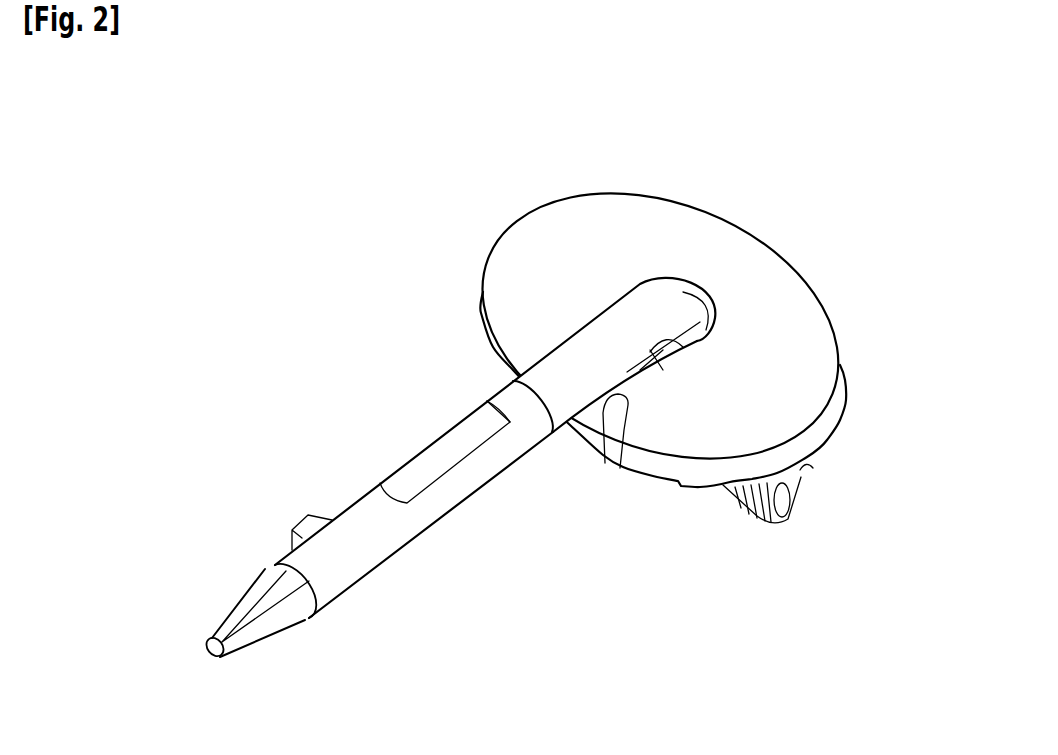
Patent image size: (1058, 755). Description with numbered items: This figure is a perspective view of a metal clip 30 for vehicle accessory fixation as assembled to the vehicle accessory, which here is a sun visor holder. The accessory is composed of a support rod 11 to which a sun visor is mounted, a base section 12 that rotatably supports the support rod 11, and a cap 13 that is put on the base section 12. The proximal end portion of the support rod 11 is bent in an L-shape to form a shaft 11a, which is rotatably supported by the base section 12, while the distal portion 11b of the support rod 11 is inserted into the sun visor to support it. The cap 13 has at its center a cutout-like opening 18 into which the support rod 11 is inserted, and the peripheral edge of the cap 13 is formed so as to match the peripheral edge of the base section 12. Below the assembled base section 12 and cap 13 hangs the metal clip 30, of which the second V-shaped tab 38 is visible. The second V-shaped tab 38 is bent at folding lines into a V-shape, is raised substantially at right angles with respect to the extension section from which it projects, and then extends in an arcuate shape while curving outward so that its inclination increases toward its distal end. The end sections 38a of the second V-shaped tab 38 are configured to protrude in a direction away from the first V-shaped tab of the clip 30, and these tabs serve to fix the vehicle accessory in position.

The support rod 11 is at (441, 401).
The shaft 11a is at (685, 344).
The distal portion 11b is at (247, 612).
The base section 12 is at (594, 433).
The cap 13 is at (588, 210).
The cutout-like opening 18 is at (620, 470).
The metal clip 30 is at (686, 378).
The second V-shaped tab 38 is at (770, 522).
The end section 38a is at (812, 468).